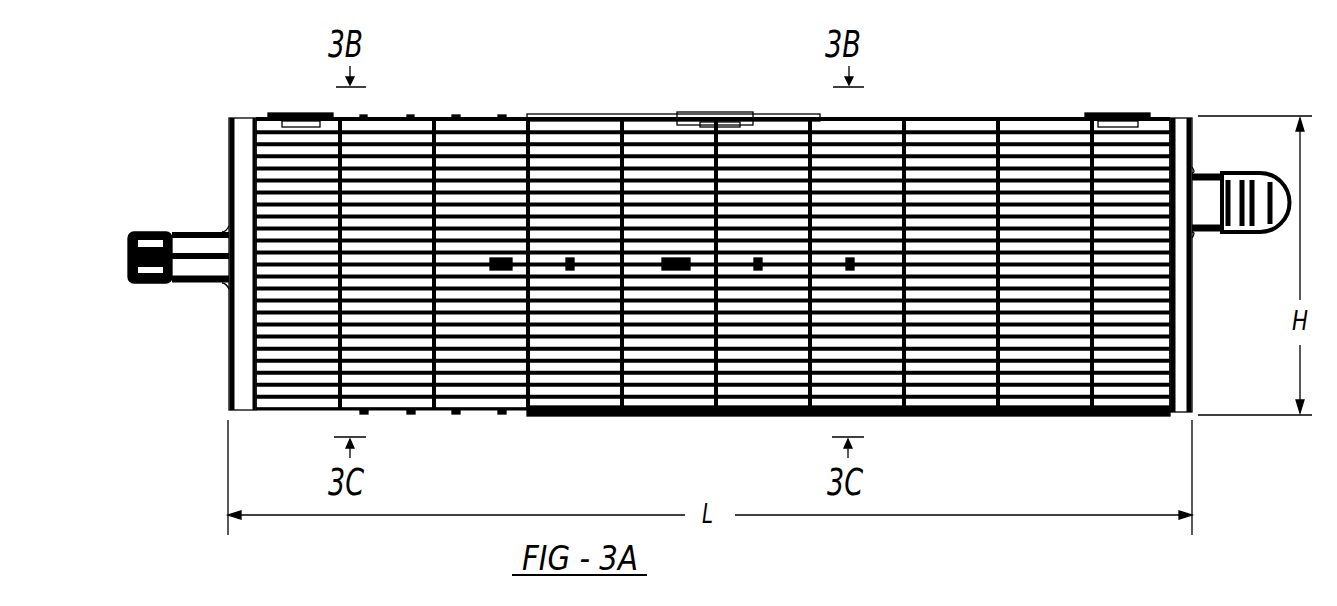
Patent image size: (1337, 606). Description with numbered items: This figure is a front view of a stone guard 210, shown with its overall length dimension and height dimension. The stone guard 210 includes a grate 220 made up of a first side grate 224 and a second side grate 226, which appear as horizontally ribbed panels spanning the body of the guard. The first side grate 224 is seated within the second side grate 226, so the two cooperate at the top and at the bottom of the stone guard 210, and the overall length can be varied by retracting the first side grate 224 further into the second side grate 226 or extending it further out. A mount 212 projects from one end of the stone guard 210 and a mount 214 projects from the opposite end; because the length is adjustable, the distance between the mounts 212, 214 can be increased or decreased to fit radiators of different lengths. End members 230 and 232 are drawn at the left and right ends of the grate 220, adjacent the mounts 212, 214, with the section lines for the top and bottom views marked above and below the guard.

The stone guard 210 is at (231, 70).
The mount 212 is at (162, 232).
The mount 214 is at (1270, 232).
The grate 220 is at (565, 120).
The first side grate 224 is at (388, 130).
The second side grate 226 is at (947, 128).
The first end plate 230 is at (242, 372).
The second end plate 232 is at (1180, 410).